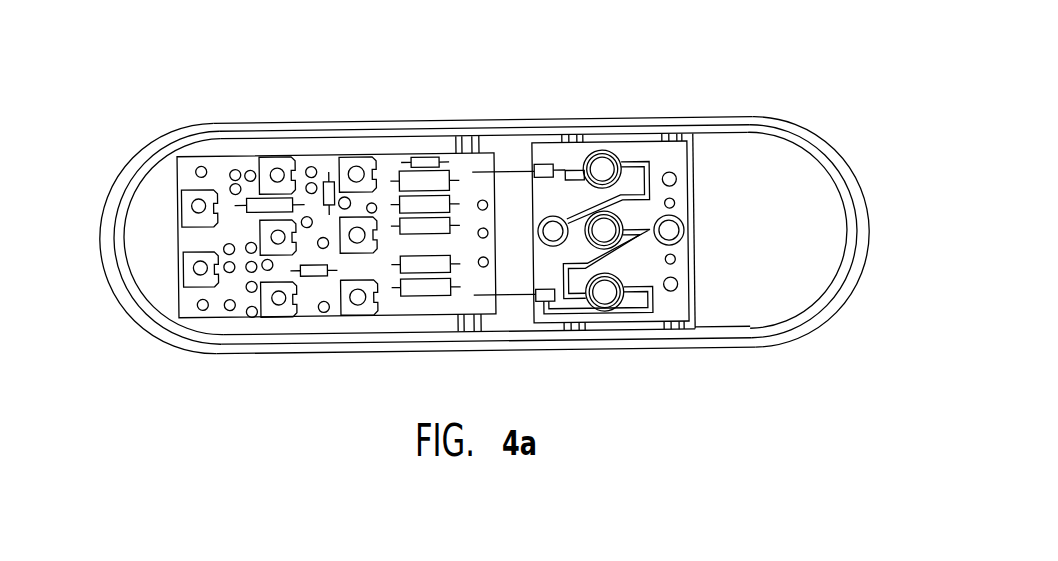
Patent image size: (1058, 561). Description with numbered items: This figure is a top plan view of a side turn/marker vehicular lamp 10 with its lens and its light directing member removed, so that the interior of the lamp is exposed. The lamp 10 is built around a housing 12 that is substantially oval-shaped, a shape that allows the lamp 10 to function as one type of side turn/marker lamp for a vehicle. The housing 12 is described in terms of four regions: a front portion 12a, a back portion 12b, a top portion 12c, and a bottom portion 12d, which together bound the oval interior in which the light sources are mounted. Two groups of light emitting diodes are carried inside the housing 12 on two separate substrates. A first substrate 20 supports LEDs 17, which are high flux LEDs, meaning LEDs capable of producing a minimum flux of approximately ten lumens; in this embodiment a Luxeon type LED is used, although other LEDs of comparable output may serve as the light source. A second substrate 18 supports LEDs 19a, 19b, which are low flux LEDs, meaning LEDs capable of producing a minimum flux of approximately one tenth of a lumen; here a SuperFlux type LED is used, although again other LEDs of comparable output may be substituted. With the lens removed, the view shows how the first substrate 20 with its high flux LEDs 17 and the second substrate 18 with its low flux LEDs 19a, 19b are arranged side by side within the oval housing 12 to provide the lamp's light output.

The lamp 10 is at (772, 78).
The housing 12 is at (779, 347).
The front portion 12a is at (868, 243).
The back portion 12b is at (99, 235).
The top portion 12c is at (448, 120).
The bottom portion 12d is at (489, 353).
The LEDs 17 is at (603, 168).
The second substrate 18 is at (391, 304).
The LEDs 19a is at (357, 172).
The LEDs 19b is at (199, 202).
The first substrate 20 is at (671, 305).